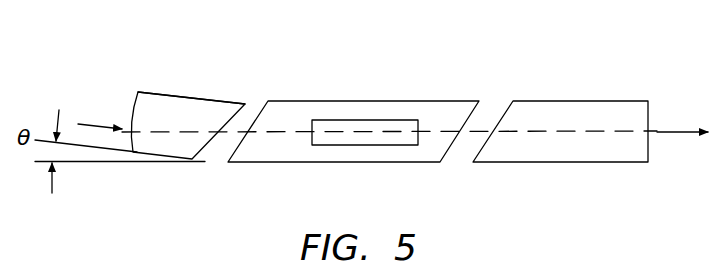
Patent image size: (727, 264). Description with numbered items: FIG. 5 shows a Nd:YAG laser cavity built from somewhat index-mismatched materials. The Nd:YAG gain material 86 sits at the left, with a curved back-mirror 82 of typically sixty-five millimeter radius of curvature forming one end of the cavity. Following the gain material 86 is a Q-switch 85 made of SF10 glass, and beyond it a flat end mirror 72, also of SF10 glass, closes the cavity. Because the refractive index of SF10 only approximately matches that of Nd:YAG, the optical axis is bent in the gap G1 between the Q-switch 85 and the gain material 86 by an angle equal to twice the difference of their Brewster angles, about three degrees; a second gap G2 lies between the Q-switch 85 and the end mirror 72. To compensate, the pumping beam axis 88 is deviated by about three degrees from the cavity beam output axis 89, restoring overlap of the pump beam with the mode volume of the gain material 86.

The pumping beam axis 88 is at (98, 127).
The back-mirror 82 is at (135, 100).
The Nd:YAG gain material 86 is at (200, 107).
The Q-switch 85 is at (387, 108).
The flat end mirror 72 is at (525, 110).
The cavity beam output axis 89 is at (667, 128).
The gap G1 is at (217, 158).
The second gap G2 is at (464, 152).